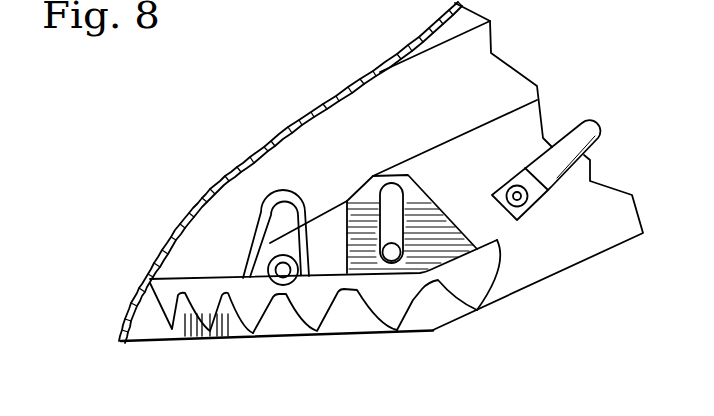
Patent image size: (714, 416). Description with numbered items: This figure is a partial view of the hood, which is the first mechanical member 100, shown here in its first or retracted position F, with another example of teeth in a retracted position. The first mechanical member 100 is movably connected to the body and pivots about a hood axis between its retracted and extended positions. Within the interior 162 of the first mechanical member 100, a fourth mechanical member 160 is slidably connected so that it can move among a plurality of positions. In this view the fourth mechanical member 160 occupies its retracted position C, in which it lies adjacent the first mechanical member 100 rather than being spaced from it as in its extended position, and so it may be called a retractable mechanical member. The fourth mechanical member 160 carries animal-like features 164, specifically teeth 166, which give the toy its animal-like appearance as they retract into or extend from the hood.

The first mechanical member 100 is at (283, 133).
The interior 162 is at (498, 78).
The first (retracted) position F is at (198, 230).
The retracted position C is at (200, 293).
The fourth mechanical member 160 is at (210, 313).
The animal-like features 164 is at (377, 302).
The teeth 166 is at (468, 292).